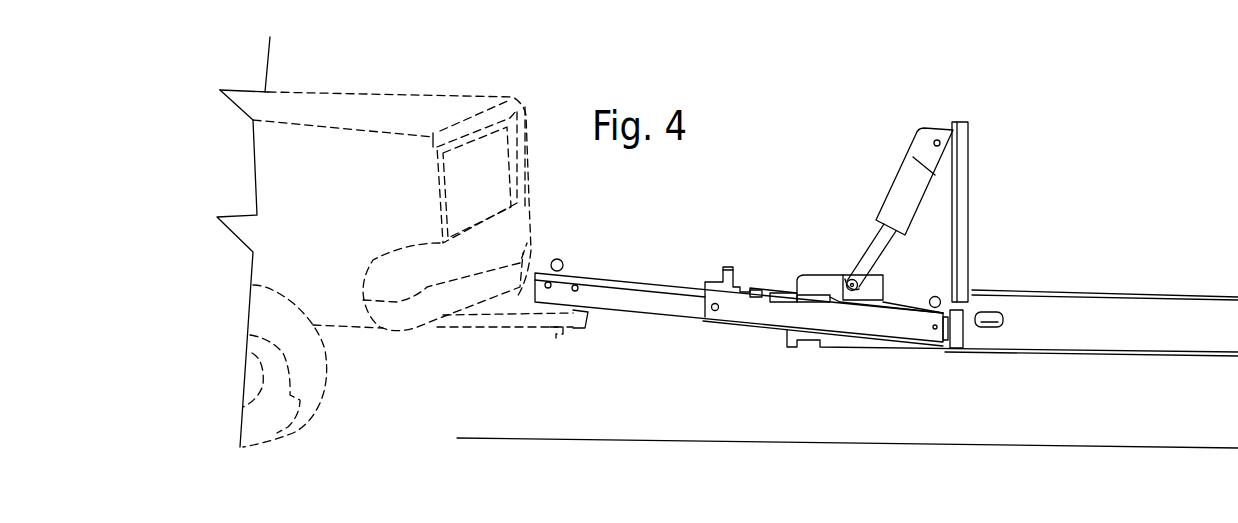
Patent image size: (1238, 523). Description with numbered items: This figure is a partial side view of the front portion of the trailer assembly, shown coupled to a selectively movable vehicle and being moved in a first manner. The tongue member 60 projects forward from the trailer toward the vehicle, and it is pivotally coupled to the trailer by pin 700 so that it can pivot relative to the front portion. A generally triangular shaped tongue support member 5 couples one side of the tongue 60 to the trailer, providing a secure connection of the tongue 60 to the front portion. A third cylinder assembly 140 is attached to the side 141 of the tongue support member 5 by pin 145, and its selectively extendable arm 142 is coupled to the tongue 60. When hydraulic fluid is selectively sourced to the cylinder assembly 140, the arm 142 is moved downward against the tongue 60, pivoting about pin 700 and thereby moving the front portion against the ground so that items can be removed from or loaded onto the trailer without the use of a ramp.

The tongue support member 5 is at (937, 197).
The tongue member 60 is at (675, 302).
The third cylinder assembly 140 is at (927, 152).
The side of member 5 141 is at (947, 271).
The selectively extendable arm 142 is at (875, 237).
The pin 145 is at (938, 138).
The pin 700 is at (935, 329).